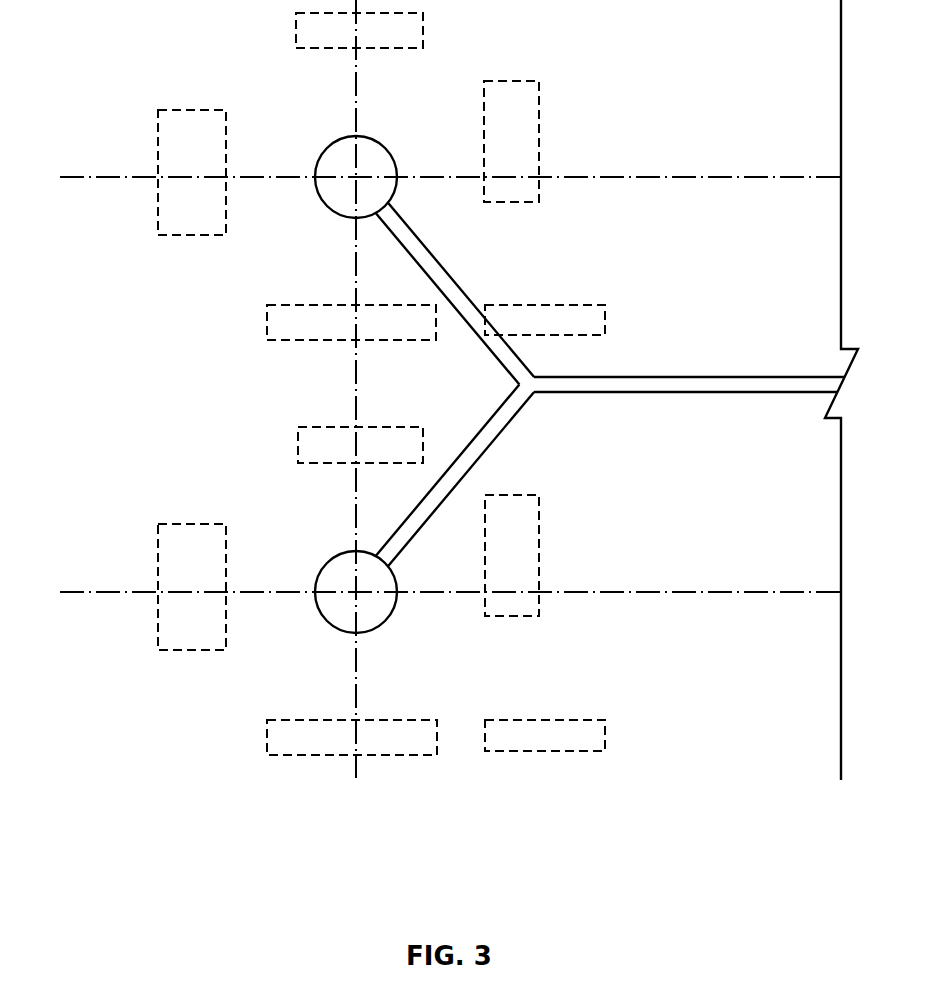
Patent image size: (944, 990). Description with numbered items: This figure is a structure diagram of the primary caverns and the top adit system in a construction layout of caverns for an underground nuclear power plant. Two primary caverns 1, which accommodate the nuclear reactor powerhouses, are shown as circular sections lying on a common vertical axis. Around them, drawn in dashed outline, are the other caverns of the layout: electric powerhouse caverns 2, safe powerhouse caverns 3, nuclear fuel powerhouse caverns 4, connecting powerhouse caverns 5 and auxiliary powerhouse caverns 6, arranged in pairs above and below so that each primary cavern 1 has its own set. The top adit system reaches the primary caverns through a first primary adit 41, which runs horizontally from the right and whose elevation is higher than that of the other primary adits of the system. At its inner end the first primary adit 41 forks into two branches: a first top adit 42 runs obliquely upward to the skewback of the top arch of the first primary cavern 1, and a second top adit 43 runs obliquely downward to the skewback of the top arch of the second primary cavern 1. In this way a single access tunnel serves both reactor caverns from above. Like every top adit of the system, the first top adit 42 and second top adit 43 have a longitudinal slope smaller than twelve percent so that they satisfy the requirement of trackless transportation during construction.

The primary cavern 1 is at (337, 158).
The electric powerhouse cavern 2 is at (542, 322).
The safe powerhouse cavern 3 is at (297, 330).
The nuclear fuel powerhouse cavern 4 is at (327, 38).
The connecting powerhouse cavern 5 is at (518, 193).
The auxiliary powerhouse cavern 6 is at (217, 158).
The first primary adit 41 is at (710, 382).
The first top adit 42 is at (497, 360).
The second top adit 43 is at (483, 438).